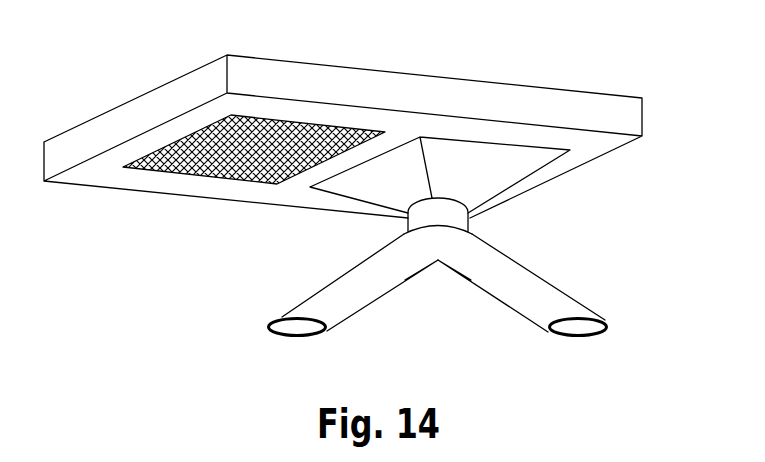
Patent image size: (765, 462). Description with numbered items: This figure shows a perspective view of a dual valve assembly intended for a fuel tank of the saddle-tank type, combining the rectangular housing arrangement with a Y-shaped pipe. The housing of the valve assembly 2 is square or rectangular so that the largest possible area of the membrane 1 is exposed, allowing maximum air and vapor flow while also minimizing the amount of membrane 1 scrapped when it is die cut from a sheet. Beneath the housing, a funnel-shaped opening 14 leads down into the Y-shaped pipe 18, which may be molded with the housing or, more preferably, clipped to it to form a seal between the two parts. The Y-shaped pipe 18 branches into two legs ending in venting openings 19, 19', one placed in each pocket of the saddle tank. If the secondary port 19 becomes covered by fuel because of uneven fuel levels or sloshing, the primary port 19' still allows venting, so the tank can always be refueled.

The housing of the valve assembly 2 is at (118, 104).
The membrane 1 is at (213, 166).
The funnel 14 is at (510, 180).
The Y-shaped pipe 18 is at (452, 256).
The venting opening (secondary port) 19 is at (313, 303).
The venting opening (primary port) 19' is at (559, 303).